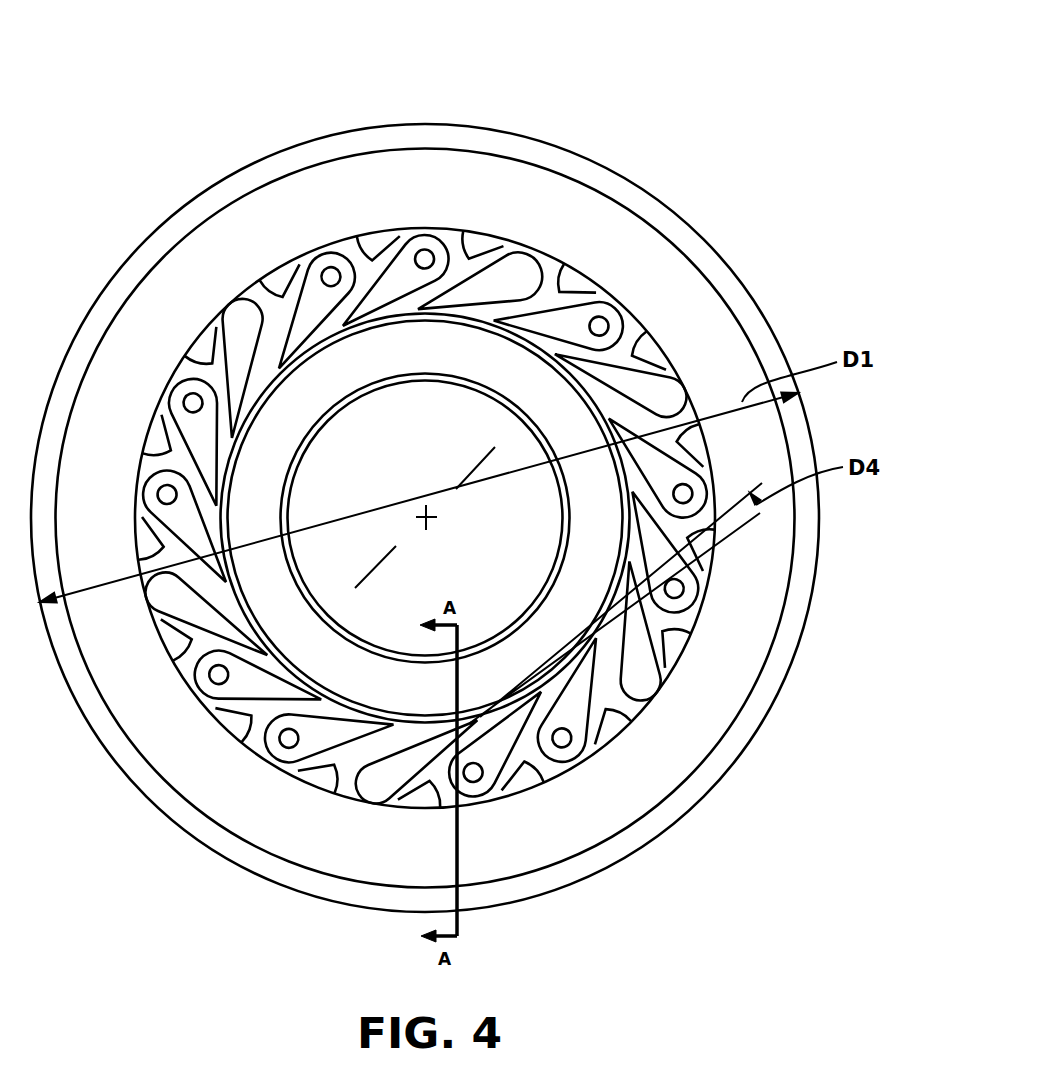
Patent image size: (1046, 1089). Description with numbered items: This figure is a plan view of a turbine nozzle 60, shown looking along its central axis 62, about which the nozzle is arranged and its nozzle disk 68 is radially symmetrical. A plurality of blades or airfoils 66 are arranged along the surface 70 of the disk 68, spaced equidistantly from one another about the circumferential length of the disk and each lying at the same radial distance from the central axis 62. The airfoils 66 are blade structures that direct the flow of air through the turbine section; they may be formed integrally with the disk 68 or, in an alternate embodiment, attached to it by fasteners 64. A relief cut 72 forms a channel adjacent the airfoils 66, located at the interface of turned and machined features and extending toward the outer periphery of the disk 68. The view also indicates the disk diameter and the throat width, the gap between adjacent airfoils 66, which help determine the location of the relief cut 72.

The turbine nozzle 60 is at (724, 137).
The central axis 62 is at (432, 528).
The fasteners 64 is at (552, 275).
The airfoils 66 is at (514, 294).
The nozzle disk 68 is at (675, 648).
The surface 70 is at (488, 227).
The relief cut 72 is at (641, 322).